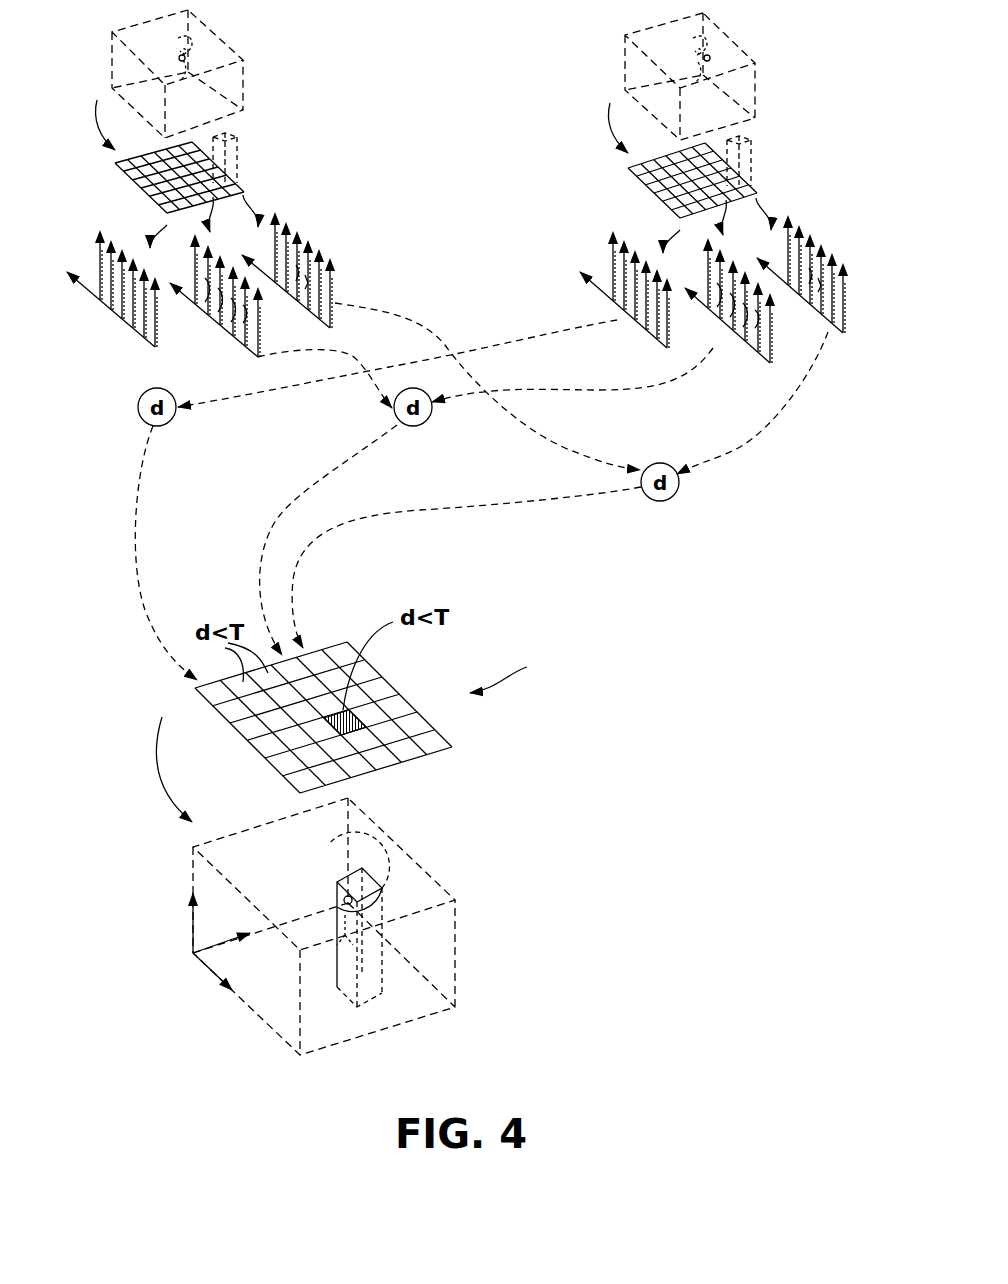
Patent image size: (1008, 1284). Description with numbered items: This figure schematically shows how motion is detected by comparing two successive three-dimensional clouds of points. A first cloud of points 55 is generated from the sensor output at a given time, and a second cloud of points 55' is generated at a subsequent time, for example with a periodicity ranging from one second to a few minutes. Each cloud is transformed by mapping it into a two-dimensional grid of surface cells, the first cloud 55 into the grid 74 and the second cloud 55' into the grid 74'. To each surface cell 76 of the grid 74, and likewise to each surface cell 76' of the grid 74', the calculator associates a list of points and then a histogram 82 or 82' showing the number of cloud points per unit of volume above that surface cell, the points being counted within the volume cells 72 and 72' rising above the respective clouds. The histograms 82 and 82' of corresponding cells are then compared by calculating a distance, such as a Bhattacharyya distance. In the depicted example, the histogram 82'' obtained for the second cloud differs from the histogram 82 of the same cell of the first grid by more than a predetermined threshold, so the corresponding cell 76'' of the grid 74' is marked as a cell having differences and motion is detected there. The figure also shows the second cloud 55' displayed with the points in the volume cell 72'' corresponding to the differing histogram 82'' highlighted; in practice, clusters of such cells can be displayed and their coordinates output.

The first cloud of points 55 is at (200, 80).
The volume cell 72 is at (247, 153).
The first 2-D grid of surface cells 74 is at (206, 177).
The surface cell 76 is at (114, 188).
The histogram 82 is at (211, 300).
The second cloud of points 55' is at (489, 534).
The volume cell 72' is at (764, 155).
The second 2-D grid of surface cells 74' is at (507, 468).
The surface cell 76' is at (627, 191).
The histogram 82' is at (728, 289).
The histogram 82'' is at (727, 338).
The marked cell 76'' is at (396, 687).
The volume cell 72'' is at (425, 919).